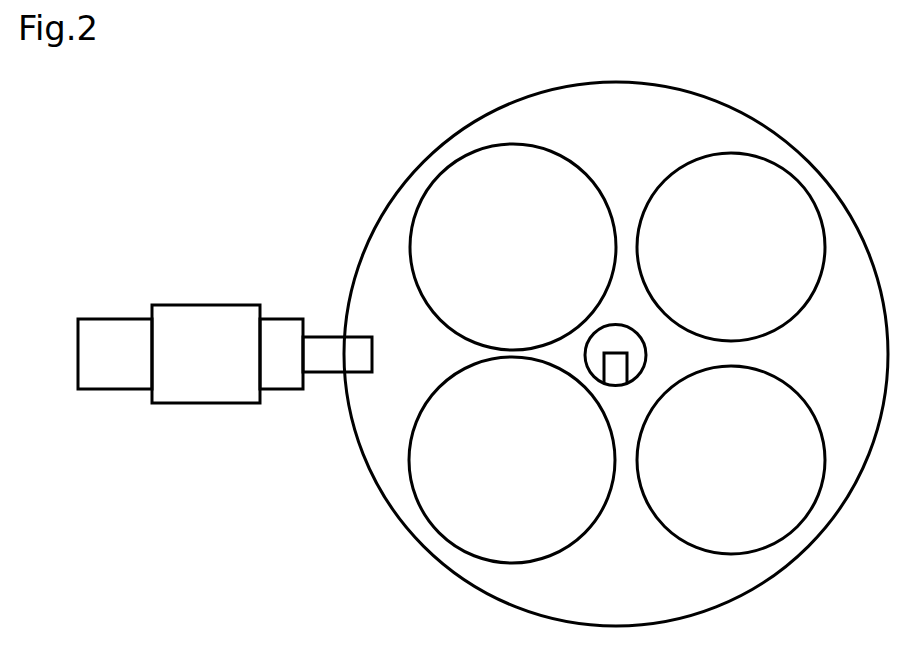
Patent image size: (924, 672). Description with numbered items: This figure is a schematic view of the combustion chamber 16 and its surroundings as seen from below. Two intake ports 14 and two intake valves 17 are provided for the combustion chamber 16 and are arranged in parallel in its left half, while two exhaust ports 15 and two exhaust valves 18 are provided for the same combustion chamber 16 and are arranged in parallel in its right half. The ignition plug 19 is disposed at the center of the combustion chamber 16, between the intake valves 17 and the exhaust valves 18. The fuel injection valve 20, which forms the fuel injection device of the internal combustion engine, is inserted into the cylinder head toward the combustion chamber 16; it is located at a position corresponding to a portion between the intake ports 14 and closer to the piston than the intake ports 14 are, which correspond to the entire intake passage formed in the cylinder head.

The intake port 14 is at (420, 282).
The exhaust port 15 is at (792, 300).
The combustion chamber 16 is at (640, 84).
The intake valve 17 is at (470, 357).
The exhaust valve 18 is at (754, 357).
The ignition plug 19 is at (646, 355).
The fuel injection valve 20 is at (207, 305).